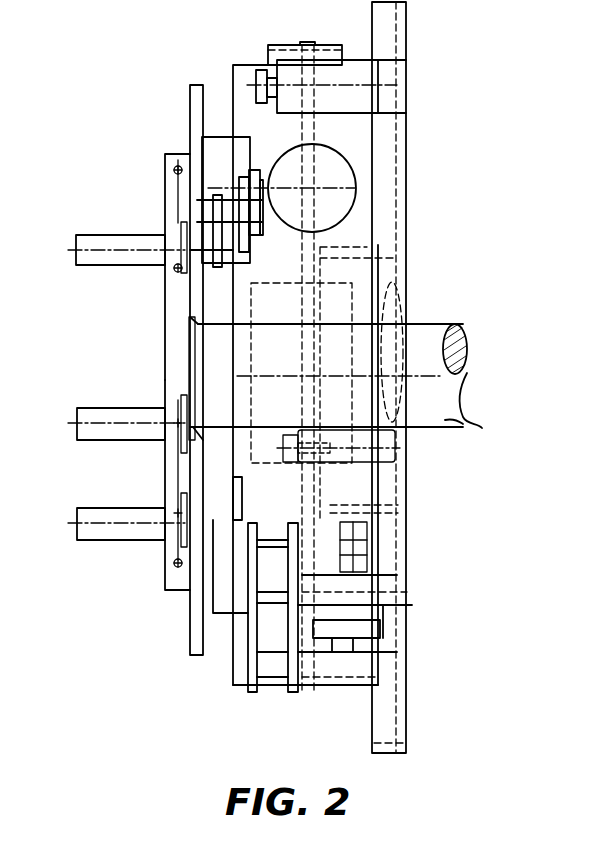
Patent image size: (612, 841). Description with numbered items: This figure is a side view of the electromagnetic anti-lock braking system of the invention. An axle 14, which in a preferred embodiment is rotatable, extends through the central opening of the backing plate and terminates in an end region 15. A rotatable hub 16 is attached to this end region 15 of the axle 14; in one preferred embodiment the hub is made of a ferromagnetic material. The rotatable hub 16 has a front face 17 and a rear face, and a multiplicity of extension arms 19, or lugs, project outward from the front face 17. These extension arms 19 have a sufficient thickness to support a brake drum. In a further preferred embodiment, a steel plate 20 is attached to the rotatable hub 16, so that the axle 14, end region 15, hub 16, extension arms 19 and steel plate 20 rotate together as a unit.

The axle 14 is at (445, 420).
The end region 15 is at (197, 335).
The rotatable hub 16 is at (175, 192).
The front face 17 is at (163, 477).
The extension arms 19 is at (78, 260).
The steel plate 20 is at (197, 630).